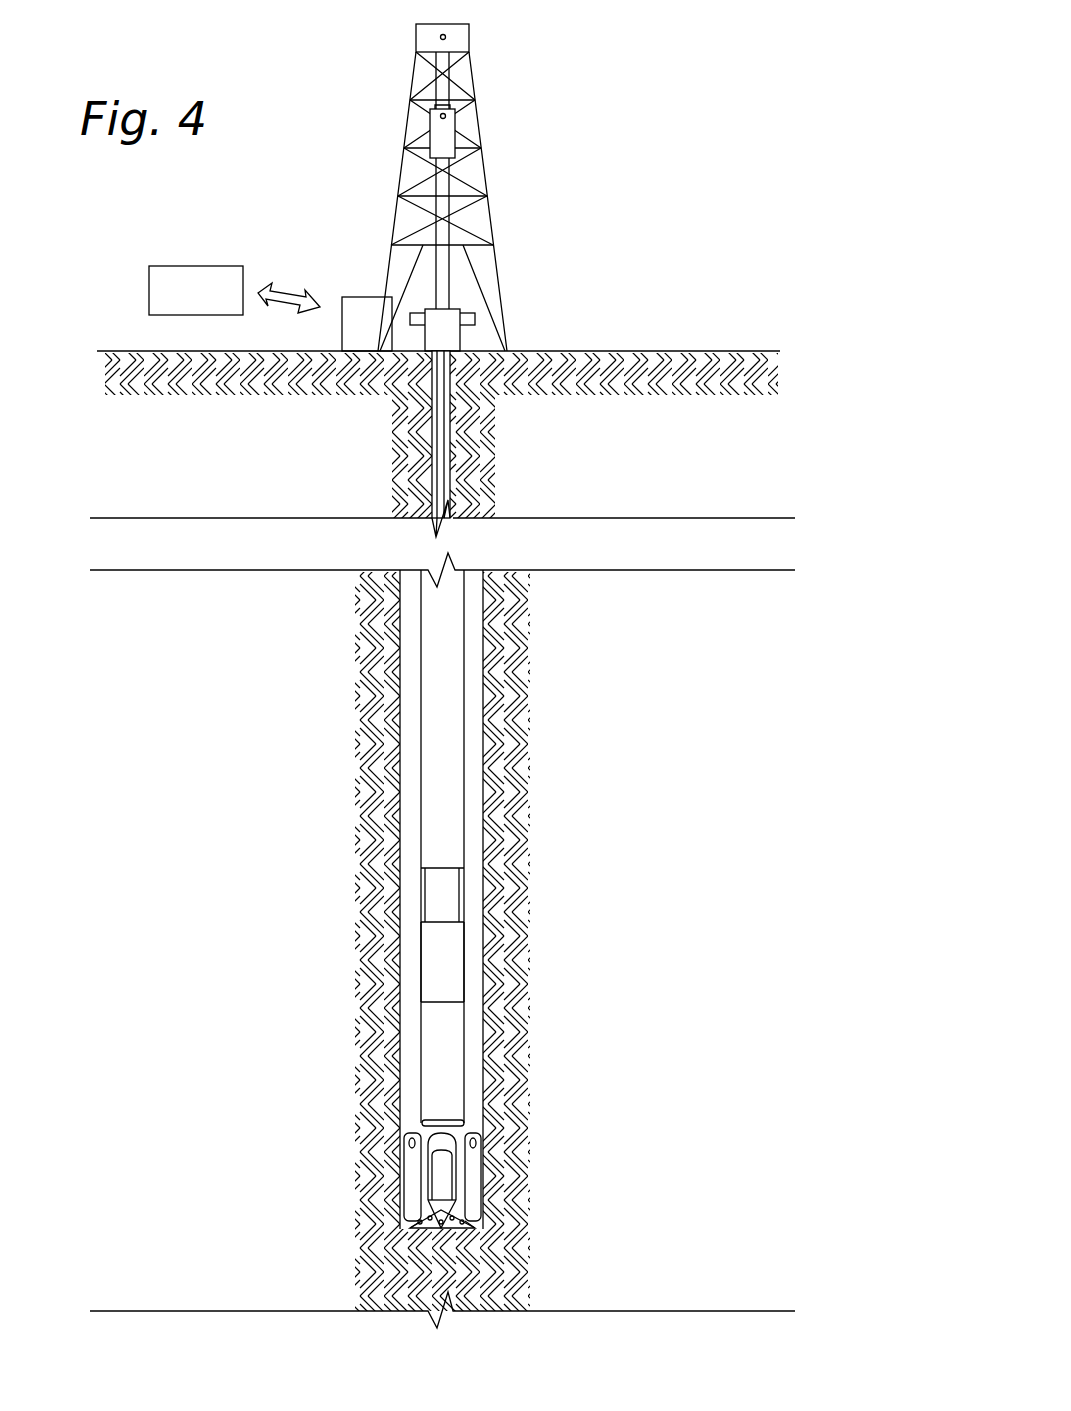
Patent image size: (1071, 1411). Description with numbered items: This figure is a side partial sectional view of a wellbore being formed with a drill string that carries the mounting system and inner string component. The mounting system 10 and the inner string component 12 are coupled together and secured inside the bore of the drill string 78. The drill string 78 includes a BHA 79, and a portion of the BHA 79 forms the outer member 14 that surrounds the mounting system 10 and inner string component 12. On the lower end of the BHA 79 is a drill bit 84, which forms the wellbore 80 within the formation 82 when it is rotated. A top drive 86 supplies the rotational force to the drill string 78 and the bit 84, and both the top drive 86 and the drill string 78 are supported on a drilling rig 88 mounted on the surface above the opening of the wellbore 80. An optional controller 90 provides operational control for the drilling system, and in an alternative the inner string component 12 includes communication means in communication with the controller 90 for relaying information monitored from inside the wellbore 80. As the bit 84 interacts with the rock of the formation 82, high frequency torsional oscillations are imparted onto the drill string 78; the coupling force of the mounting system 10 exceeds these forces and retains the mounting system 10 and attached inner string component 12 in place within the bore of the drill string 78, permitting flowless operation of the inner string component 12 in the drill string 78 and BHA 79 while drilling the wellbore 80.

The mounting system 10 is at (444, 935).
The inner string component 12 is at (425, 900).
The outer member 14 is at (459, 900).
The drill string 78 is at (450, 768).
The BHA 79 is at (421, 975).
The wellbore 80 is at (478, 683).
The formation 82 is at (737, 902).
The drill bit 84 is at (473, 1207).
The top drive 86 is at (443, 138).
The drilling rig 88 is at (474, 77).
The controller 90 is at (212, 306).